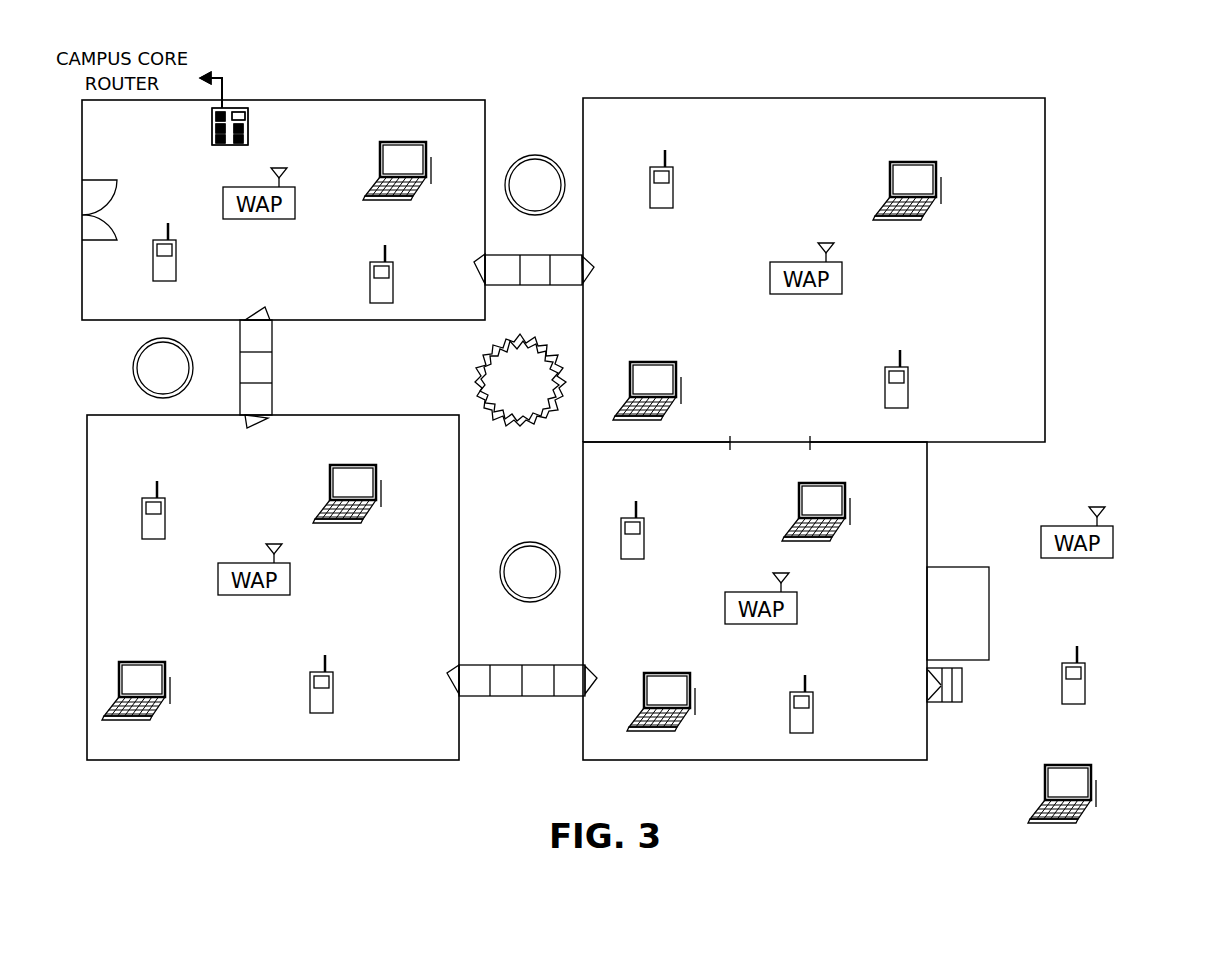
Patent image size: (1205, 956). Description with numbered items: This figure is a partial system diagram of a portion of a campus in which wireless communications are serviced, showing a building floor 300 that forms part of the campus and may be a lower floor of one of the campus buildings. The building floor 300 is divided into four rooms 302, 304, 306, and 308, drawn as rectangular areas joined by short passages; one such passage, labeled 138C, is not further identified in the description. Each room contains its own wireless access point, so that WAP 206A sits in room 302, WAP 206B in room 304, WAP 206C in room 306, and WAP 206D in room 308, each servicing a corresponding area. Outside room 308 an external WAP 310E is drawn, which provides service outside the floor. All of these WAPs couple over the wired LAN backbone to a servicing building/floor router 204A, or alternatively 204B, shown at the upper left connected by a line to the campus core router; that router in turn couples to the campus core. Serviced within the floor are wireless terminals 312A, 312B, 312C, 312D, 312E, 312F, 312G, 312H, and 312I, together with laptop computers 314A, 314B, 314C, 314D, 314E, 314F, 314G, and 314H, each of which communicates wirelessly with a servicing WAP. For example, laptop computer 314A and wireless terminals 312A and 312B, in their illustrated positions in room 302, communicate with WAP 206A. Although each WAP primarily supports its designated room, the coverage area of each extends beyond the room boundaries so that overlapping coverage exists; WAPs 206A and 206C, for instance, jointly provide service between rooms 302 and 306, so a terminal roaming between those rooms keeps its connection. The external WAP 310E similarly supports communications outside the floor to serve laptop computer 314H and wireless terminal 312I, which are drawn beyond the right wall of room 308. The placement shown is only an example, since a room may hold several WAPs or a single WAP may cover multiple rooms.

The building floor 300 is at (183, 802).
The room 302 is at (452, 100).
The room 304 is at (660, 98).
The room 306 is at (242, 763).
The room 308 is at (752, 762).
The hallway / stairwell 138C is at (247, 422).
The building/floor router 204A is at (212, 131).
The building/floor router 204B is at (176, 112).
The WAP 206A is at (295, 200).
The WAP 206B is at (842, 278).
The WAP 206C is at (290, 580).
The WAP 206D is at (797, 608).
The external wireless access point 310E is at (1113, 540).
The wireless terminal 312A is at (176, 270).
The wireless terminal 312B is at (393, 292).
The wireless terminal 312C is at (672, 197).
The wireless terminal 312D is at (908, 397).
The wireless terminal 312E is at (165, 530).
The wireless terminal 312F is at (333, 703).
The wireless terminal 312G is at (644, 550).
The wireless terminal 312H is at (812, 722).
The wireless terminal 312I is at (1085, 693).
The laptop computer 314A is at (394, 143).
The laptop computer 314B is at (645, 363).
The laptop computer 314C is at (906, 163).
The laptop computer 314D is at (134, 663).
The laptop computer 314E is at (346, 466).
The laptop computer 314F is at (658, 674).
The laptop computer 314G is at (814, 484).
The laptop computer 314H is at (1061, 766).